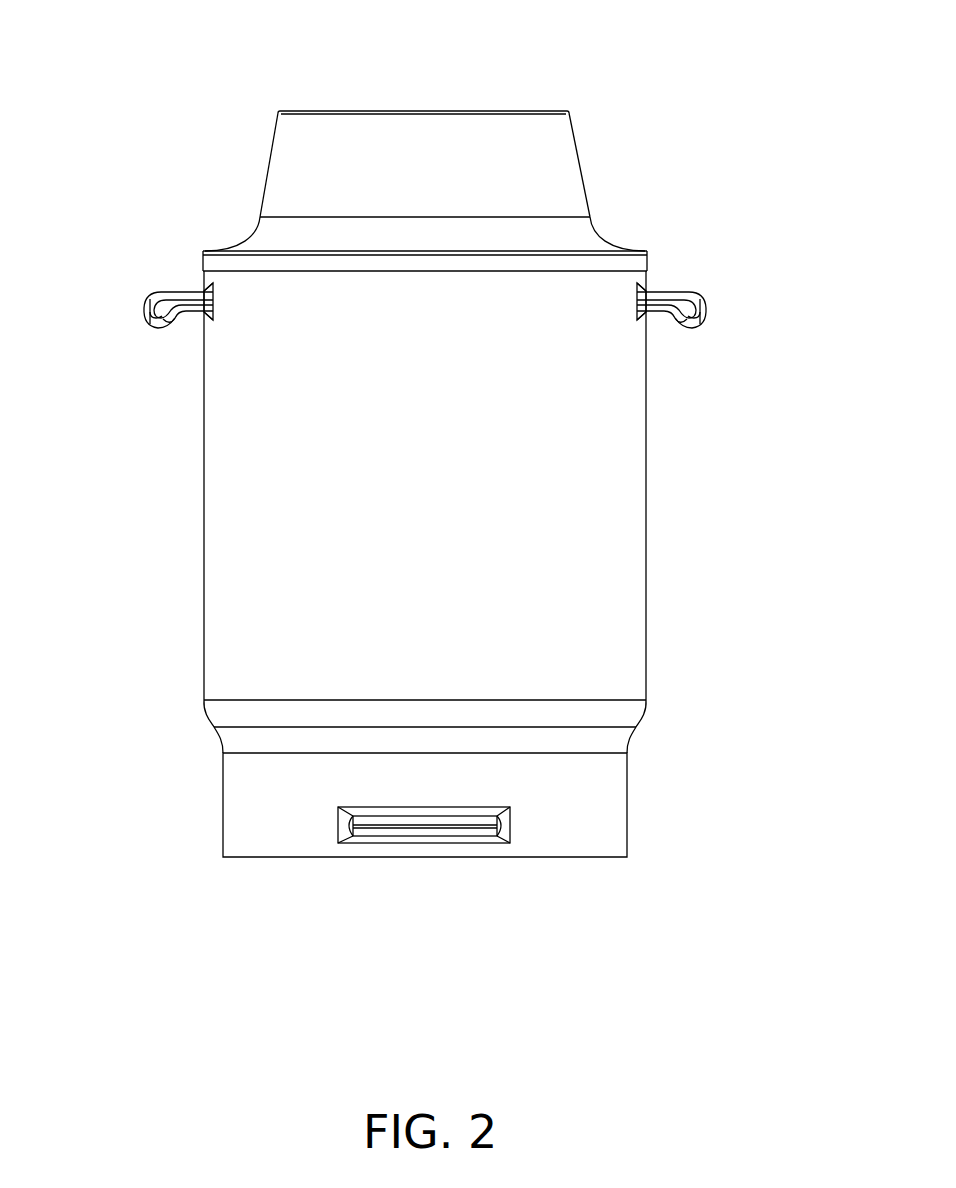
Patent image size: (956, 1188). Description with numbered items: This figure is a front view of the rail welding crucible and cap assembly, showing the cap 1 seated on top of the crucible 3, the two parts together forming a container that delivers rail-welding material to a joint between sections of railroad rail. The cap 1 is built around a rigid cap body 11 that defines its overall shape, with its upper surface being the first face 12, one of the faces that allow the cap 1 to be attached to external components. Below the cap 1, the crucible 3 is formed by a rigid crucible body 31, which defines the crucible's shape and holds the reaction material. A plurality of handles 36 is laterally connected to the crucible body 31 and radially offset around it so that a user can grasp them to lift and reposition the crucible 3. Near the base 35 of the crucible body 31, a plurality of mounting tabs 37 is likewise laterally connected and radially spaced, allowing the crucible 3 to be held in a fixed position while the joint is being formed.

The cap 1 is at (216, 150).
The crucible 3 is at (132, 490).
The cap body 11 is at (575, 160).
The first face 12 is at (531, 98).
The crucible body 31 is at (638, 504).
The base 35 is at (555, 866).
The plurality of handles 36 is at (152, 300).
The plurality of mounting tabs 37 is at (510, 826).